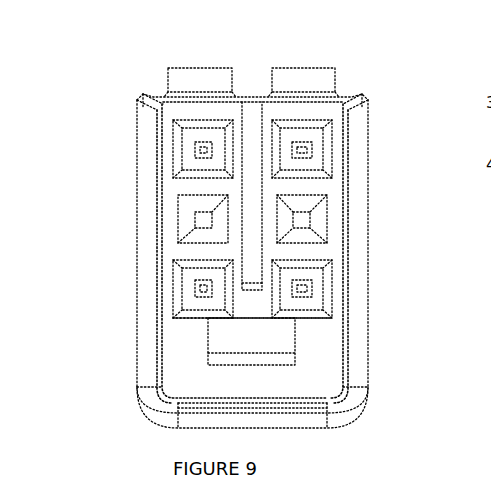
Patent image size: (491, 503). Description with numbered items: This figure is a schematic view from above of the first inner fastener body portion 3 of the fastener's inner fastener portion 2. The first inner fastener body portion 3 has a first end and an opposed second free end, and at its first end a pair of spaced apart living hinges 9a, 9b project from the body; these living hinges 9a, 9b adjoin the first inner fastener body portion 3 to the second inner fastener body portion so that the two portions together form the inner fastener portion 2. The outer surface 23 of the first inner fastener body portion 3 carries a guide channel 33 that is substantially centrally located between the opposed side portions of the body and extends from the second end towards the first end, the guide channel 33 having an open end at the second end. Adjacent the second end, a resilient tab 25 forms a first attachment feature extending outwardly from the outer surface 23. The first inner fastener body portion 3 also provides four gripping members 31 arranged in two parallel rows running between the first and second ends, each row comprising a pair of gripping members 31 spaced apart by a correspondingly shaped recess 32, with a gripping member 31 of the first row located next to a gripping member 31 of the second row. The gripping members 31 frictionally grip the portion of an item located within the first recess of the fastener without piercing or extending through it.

The inner fastener portion 2 is at (145, 163).
The first inner fastener body portion 3 is at (175, 110).
The living hinge 9a is at (300, 76).
The living hinge 9b is at (197, 82).
The outer surface 23 is at (330, 345).
The resilient tab 25 is at (258, 353).
The gripping member 31 is at (312, 285).
The recess 32 is at (203, 220).
The guide channel 33 is at (254, 130).